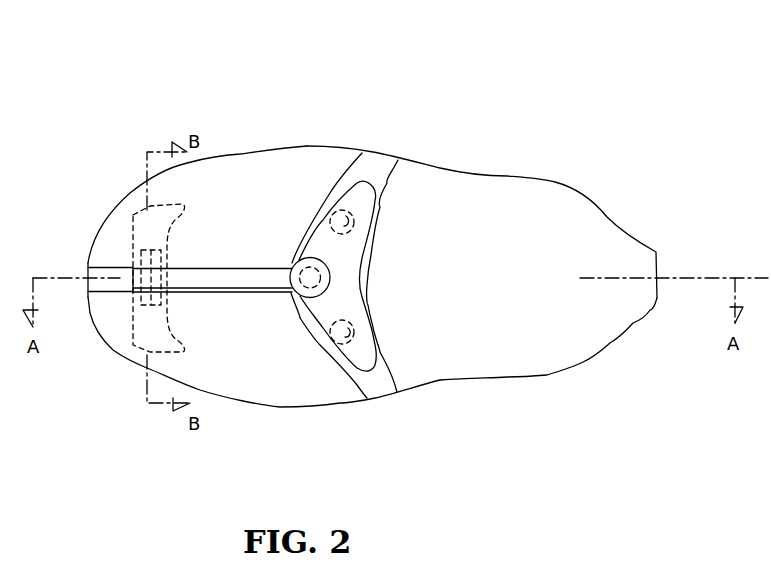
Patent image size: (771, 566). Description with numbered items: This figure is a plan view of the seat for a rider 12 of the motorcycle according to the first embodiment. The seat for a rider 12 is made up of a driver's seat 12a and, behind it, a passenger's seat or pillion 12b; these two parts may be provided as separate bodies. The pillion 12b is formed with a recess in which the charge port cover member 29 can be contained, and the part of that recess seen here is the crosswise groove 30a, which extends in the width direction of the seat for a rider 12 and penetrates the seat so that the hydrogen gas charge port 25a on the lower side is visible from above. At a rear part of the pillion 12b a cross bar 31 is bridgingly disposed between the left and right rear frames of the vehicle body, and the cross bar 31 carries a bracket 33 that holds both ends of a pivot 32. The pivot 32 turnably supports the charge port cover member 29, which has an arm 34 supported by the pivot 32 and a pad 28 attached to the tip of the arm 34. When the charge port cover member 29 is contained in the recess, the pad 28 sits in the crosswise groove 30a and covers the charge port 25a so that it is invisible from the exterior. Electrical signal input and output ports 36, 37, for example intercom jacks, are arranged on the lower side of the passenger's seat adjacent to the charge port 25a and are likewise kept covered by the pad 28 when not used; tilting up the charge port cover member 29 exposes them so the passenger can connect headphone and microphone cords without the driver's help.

The seat for a rider 12 is at (530, 177).
The driver's seat 12a is at (505, 363).
The passenger's seat (pillion) 12b is at (238, 176).
The charge port 25a is at (308, 300).
The pad 28 is at (362, 192).
The charge port cover member 29 is at (368, 75).
The crosswise groove 30a is at (368, 393).
The cross bar 31 is at (143, 212).
The pivot 32 is at (147, 303).
The bracket 33 is at (130, 257).
The arm 34 is at (274, 266).
The electrical signal input and output port 36 is at (352, 327).
The electrical signal input and output port 37 is at (347, 227).